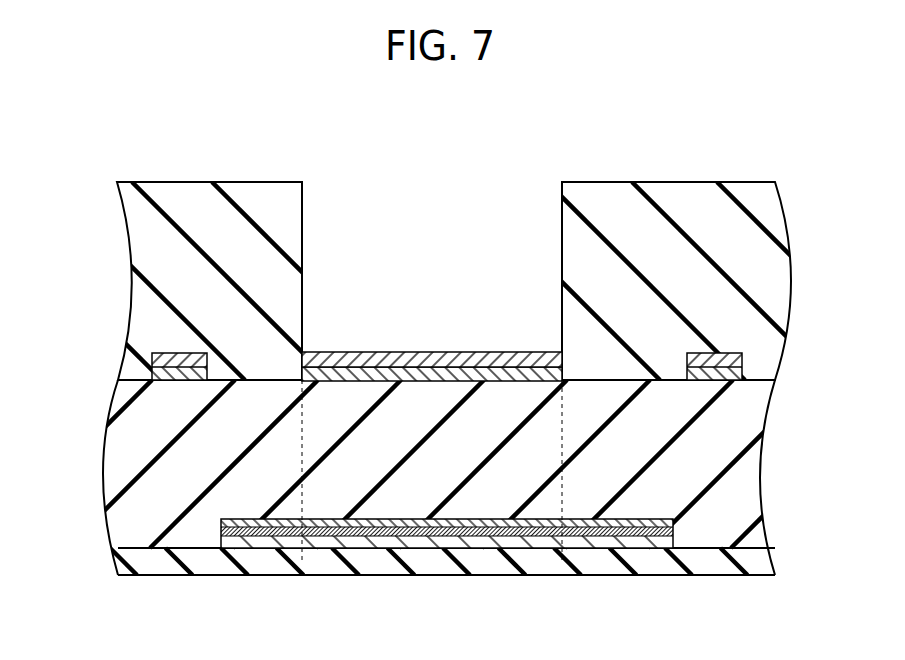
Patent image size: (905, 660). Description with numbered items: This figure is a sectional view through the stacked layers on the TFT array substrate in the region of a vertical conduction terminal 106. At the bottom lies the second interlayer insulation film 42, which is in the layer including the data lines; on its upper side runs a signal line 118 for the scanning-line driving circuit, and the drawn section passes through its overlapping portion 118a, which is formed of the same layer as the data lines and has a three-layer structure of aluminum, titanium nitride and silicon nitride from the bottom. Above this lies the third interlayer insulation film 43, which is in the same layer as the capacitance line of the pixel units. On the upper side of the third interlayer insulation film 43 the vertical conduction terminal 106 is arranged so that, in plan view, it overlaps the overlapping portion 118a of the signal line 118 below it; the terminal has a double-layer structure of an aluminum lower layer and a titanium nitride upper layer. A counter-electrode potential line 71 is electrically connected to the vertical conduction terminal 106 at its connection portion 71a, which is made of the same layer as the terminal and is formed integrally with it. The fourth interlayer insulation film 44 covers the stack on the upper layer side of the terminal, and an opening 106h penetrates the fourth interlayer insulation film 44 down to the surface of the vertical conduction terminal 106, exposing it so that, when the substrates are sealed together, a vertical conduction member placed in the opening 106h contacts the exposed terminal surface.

The second interlayer insulation film 42 is at (756, 557).
The third interlayer insulation film 43 is at (748, 470).
The fourth interlayer insulation film 44 is at (773, 282).
The counter-electrode potential line 71 is at (151, 356).
The connection portion 71a is at (560, 344).
The vertical conduction terminal 106 is at (404, 382).
The opening 106h is at (562, 234).
The signal line for the scanning-line driving circuit 118 is at (674, 522).
The overlapping portion 118a is at (560, 516).